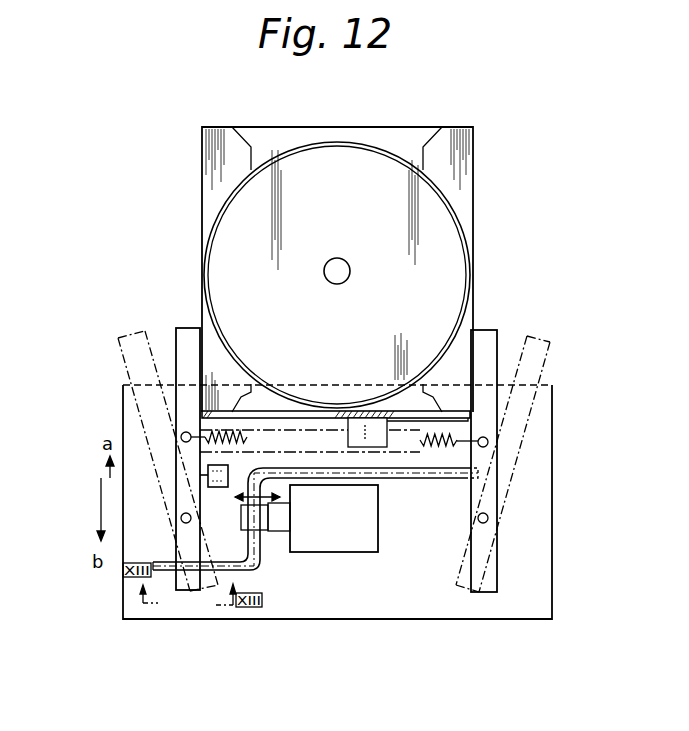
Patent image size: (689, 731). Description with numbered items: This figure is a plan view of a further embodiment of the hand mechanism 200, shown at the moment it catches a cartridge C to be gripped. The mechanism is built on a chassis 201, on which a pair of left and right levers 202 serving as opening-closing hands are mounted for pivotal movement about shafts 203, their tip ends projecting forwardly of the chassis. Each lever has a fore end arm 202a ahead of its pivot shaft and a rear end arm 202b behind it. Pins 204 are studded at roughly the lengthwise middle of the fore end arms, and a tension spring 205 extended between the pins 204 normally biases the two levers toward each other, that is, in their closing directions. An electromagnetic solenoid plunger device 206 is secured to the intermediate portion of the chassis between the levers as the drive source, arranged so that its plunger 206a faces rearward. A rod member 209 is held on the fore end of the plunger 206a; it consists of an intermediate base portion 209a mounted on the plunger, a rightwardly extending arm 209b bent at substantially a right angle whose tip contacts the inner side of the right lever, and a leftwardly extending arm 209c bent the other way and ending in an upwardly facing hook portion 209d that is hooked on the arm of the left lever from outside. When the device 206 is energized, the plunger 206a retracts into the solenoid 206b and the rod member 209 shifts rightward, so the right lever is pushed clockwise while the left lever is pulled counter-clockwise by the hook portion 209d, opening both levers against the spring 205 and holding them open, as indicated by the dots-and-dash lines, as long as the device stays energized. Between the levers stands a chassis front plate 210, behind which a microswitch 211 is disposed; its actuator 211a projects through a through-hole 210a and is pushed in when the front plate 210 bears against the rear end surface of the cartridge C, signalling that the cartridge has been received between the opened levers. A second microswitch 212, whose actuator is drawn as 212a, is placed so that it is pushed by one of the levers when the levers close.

The cartridge C is at (474, 207).
The hand mechanism 200 is at (552, 565).
The chassis 201 is at (540, 495).
The levers 202 is at (186, 330).
The fore end arms of the levers 202a is at (190, 402).
The rear end arms of the levers 202b is at (186, 591).
The shafts 203 is at (181, 518).
The pins 204 is at (181, 437).
The tension spring 205 is at (247, 438).
The electromagnetic solenoid plunger device 206 is at (334, 518).
The plunger 206a is at (283, 523).
The solenoid 206b is at (375, 552).
The rod member 209 is at (267, 572).
The intermediate base portion 209a is at (257, 540).
The rightwardly extending arm 209b is at (457, 474).
The leftwardly extending arm 209c is at (210, 571).
The hook portion 209d is at (163, 571).
The chassis front plate 210 is at (292, 412).
The through-hole 210a is at (350, 413).
The microswitch 211 is at (380, 445).
The actuator 211a is at (368, 418).
The microswitch 212 is at (220, 489).
The switch actuator 212a is at (205, 475).